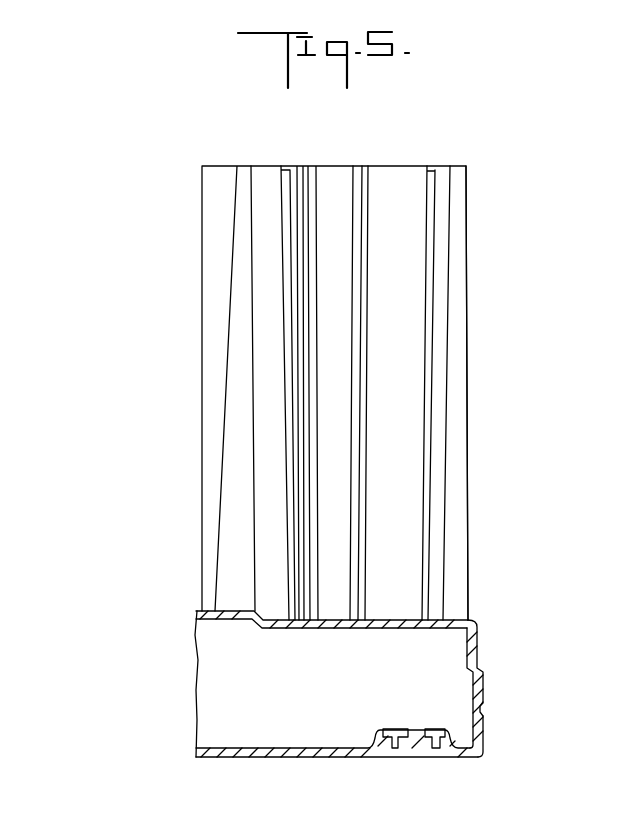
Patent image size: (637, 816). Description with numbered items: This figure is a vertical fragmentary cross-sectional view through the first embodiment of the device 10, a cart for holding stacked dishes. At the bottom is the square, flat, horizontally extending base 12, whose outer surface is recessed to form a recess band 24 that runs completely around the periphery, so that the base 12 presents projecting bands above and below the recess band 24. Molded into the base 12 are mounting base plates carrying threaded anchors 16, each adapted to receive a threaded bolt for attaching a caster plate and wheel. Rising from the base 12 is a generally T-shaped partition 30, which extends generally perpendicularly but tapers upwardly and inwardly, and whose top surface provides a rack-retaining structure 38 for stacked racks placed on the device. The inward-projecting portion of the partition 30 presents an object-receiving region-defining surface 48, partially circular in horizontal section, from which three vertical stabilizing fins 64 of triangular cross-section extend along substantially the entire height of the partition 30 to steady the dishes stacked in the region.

The device 10 is at (162, 255).
The base 12 is at (487, 656).
The threaded anchors 16 is at (430, 729).
The recess band 24 is at (481, 708).
The T-shaped partition 30 is at (267, 166).
The rack-retaining structure 38 is at (425, 161).
The object-receiving region-defining surface 48 is at (398, 187).
The stabilizing fins 64 is at (357, 192).